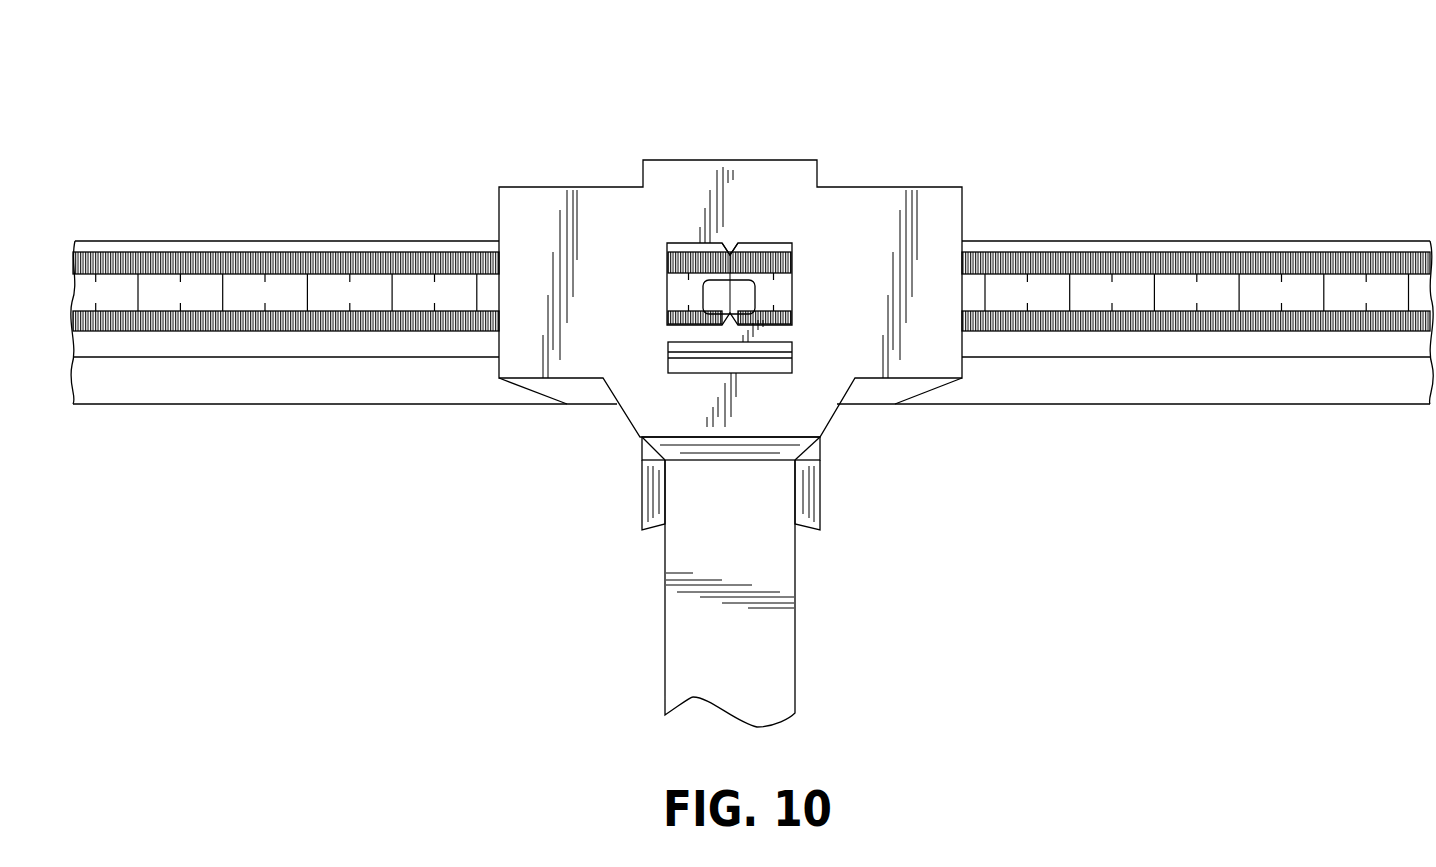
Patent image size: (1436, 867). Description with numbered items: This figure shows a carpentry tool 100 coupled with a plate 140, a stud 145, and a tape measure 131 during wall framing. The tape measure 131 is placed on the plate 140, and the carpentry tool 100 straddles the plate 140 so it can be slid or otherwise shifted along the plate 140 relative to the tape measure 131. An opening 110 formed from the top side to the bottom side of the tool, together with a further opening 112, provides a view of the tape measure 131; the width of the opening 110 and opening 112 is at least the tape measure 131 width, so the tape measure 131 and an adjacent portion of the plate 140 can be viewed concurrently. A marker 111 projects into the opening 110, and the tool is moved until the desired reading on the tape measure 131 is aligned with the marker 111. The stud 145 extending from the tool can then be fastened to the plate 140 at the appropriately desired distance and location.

The carpentry tool 100 is at (561, 150).
The opening 110 is at (673, 240).
The marker 111 is at (729, 252).
The opening 112 is at (790, 348).
The tape measure 131 is at (1258, 253).
The plate 140 is at (1080, 241).
The stud 145 is at (798, 628).